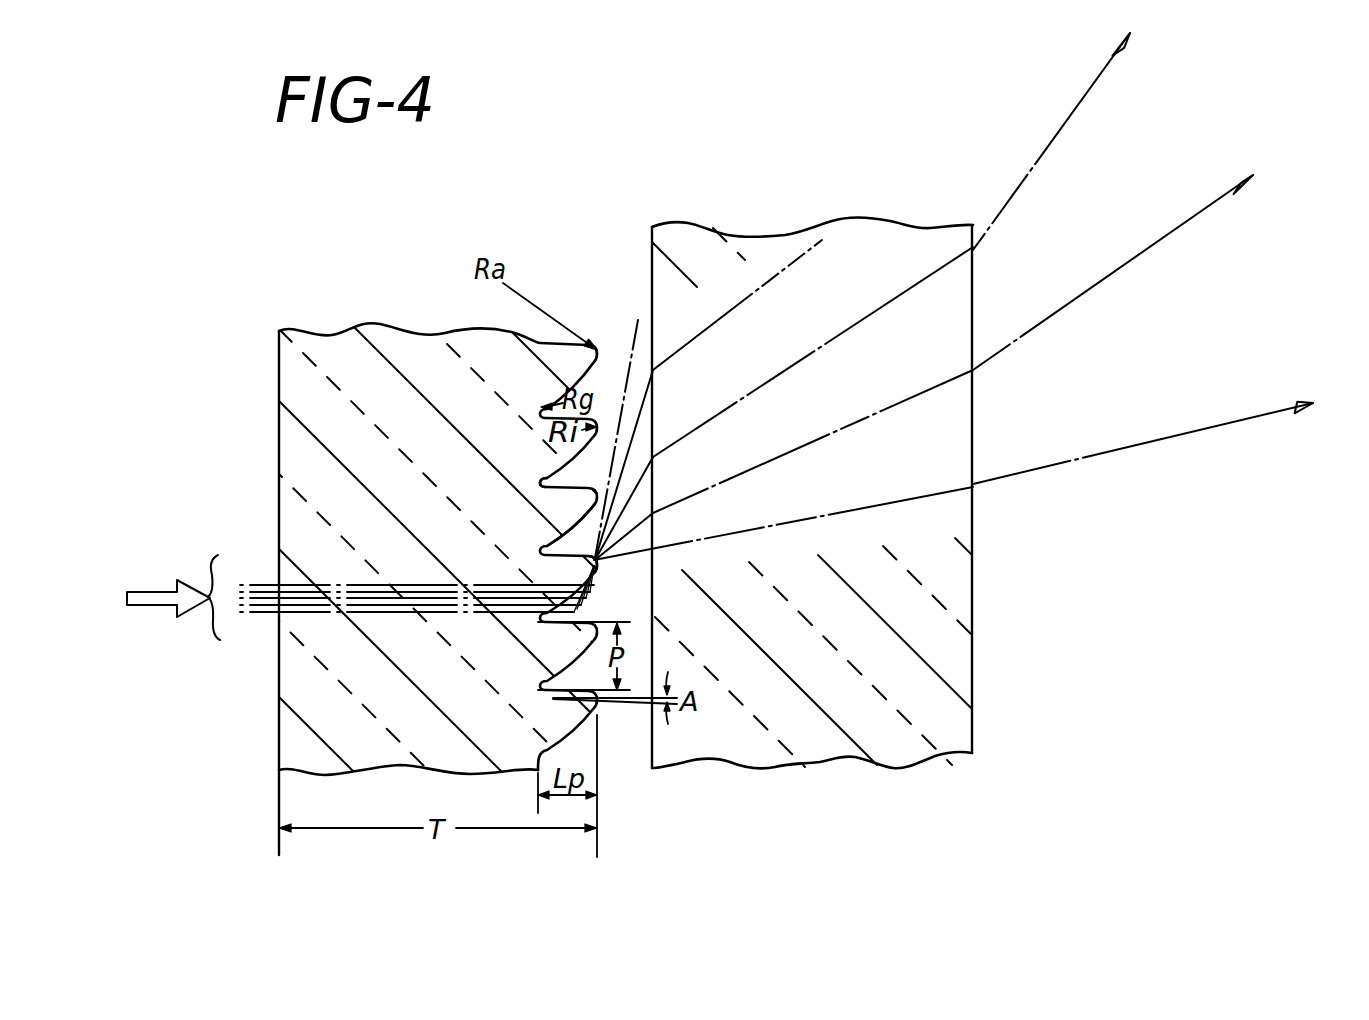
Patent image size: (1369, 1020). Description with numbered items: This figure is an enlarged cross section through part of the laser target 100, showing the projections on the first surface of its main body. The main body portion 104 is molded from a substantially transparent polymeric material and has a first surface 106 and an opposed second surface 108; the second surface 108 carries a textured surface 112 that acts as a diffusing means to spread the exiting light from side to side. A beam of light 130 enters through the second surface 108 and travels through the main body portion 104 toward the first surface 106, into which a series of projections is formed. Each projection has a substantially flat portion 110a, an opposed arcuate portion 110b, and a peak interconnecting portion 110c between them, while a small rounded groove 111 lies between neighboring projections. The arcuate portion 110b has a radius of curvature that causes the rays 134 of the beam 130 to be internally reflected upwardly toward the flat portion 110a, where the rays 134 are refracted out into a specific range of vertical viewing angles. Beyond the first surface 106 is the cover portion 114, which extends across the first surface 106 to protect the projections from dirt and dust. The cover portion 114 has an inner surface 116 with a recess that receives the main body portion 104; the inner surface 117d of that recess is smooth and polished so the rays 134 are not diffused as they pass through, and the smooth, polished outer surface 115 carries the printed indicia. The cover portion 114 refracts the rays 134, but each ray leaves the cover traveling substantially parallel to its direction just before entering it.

The target 100 is at (597, 210).
The main body portion 104 is at (383, 747).
The first surface 106 is at (607, 752).
The second surface 108 is at (270, 727).
The flat portion 110a is at (550, 343).
The arcuate portion 110b is at (594, 562).
The peak interconnecting portion 110c is at (593, 363).
The groove 111 is at (548, 472).
The textured surface 112 is at (279, 345).
The cover portion 114 is at (913, 748).
The outer surface 115 is at (973, 626).
The inner surface 116 is at (650, 238).
The inner surface of the recess 117d is at (650, 267).
The beam of light 130 is at (155, 585).
The rays 134 is at (793, 363).